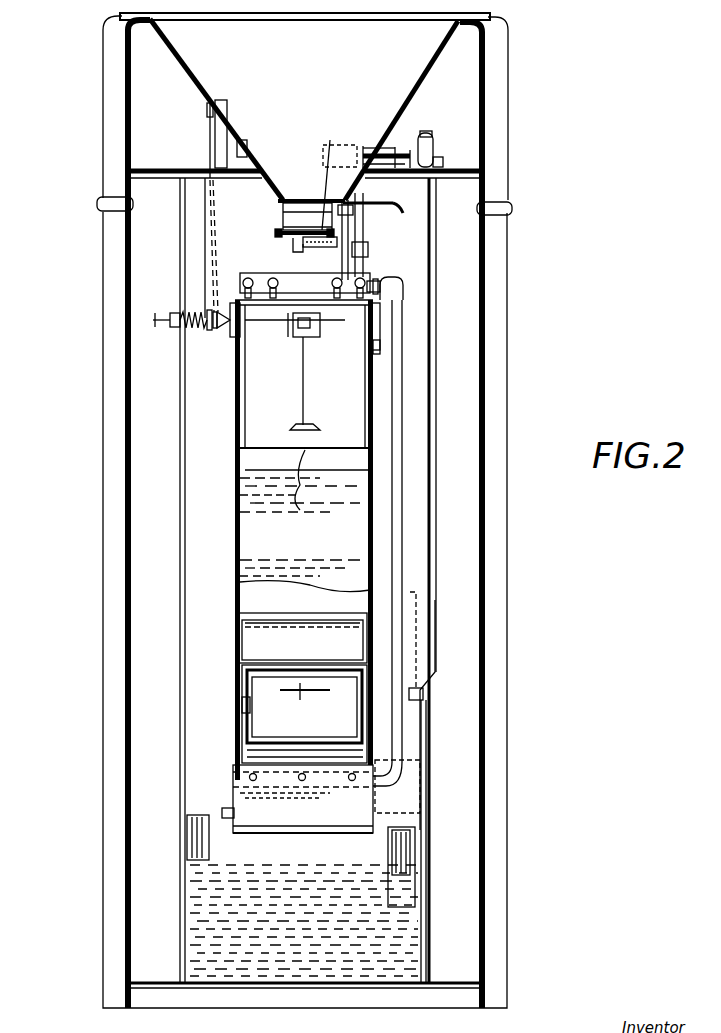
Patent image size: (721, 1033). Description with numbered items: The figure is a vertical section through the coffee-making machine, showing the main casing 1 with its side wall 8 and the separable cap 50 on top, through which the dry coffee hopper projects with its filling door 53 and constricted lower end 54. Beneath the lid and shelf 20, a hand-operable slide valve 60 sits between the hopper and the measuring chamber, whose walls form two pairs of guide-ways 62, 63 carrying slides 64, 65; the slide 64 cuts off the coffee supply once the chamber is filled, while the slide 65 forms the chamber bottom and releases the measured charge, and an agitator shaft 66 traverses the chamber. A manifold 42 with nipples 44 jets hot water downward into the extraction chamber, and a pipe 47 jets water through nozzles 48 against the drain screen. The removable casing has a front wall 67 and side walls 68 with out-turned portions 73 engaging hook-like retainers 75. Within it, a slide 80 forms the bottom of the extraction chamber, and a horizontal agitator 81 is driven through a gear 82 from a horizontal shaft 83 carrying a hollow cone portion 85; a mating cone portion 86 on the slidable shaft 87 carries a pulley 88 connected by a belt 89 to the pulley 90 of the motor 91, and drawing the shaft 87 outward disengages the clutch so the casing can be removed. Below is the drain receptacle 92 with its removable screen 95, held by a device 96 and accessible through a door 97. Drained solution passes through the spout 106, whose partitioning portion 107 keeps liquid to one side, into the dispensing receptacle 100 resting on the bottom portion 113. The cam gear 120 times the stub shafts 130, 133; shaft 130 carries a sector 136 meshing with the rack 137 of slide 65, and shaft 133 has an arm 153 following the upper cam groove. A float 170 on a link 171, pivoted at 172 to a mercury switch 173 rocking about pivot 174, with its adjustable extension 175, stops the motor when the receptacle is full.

The casing 1 is at (481, 526).
The side wall 8 is at (180, 520).
The lid and shelf 20 is at (149, 168).
The manifold 42 is at (240, 275).
The nipples 44 is at (332, 285).
The pipe 47 is at (398, 424).
The nozzles 48 is at (352, 782).
The cap 50 is at (507, 73).
The filling door 53 is at (275, 22).
The constricted lower end 54 is at (297, 167).
The slide valve 60 is at (385, 199).
The guide-way 62 is at (283, 202).
The guide-way 63 is at (278, 233).
The slide 64 is at (290, 213).
The slide 65 is at (286, 245).
The agitator shaft 66 is at (336, 177).
The front wall 67 is at (260, 542).
The side walls 68 is at (238, 428).
The out-turned portions 73 is at (381, 365).
The retainers 75 is at (232, 340).
The slide 80 is at (305, 521).
The agitator 81 is at (318, 428).
The gear 82 is at (320, 323).
The horizontal shaft 83 is at (290, 327).
The hollow cone portion 85 is at (222, 330).
The cone portion 86 is at (207, 328).
The shaft 87 is at (161, 319).
The pulley 88 is at (212, 318).
The belt 89 is at (212, 232).
The pulley 90 is at (207, 100).
The motor 91 is at (232, 128).
The drain receptacle 92 is at (258, 638).
The removable screen 95 is at (250, 690).
The holding device 96 is at (243, 708).
The door 97 is at (242, 735).
The dispensing receptacle 100 is at (197, 840).
The spout 106 is at (285, 834).
The partitioning portion 107 is at (247, 792).
The bottom portion 113 is at (244, 990).
The cam gear 120 is at (400, 147).
The shaft 130 is at (365, 218).
The shaft 133 is at (372, 270).
The sector 136 is at (308, 249).
The rack 137 is at (293, 250).
The arm 153 is at (380, 147).
The float 170 is at (405, 887).
The link 171 is at (440, 596).
The pivot 172 is at (441, 160).
The mercury switch 173 is at (433, 145).
The pivot 174 is at (410, 150).
The extension 175 is at (417, 646).